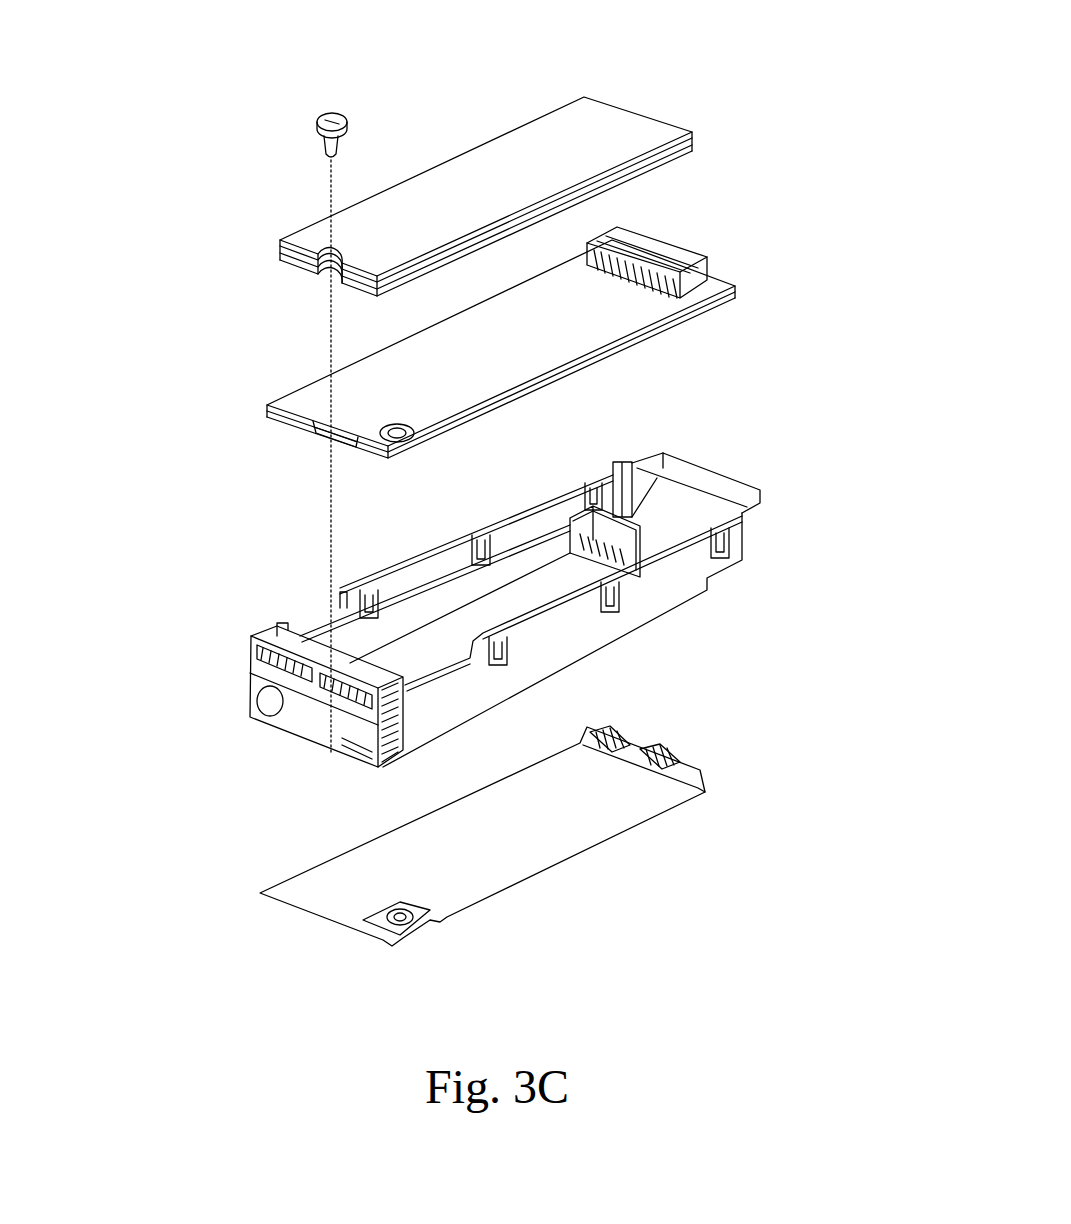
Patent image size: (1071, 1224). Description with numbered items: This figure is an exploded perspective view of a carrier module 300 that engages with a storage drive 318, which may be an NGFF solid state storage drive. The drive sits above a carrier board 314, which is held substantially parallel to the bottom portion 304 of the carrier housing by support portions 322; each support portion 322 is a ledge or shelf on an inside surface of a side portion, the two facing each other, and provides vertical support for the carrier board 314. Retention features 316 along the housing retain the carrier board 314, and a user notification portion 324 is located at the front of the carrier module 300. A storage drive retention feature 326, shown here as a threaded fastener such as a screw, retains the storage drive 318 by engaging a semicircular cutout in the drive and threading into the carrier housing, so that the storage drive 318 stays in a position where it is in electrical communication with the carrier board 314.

The carrier module 300 is at (175, 113).
The bottom portion 304 is at (565, 807).
The carrier board 314 is at (575, 309).
The retention features 316 is at (347, 595).
The storage drive 318 is at (615, 138).
The support portion 322 is at (577, 523).
The user notification portion 324 is at (257, 700).
The storage drive retention feature 326 is at (318, 136).